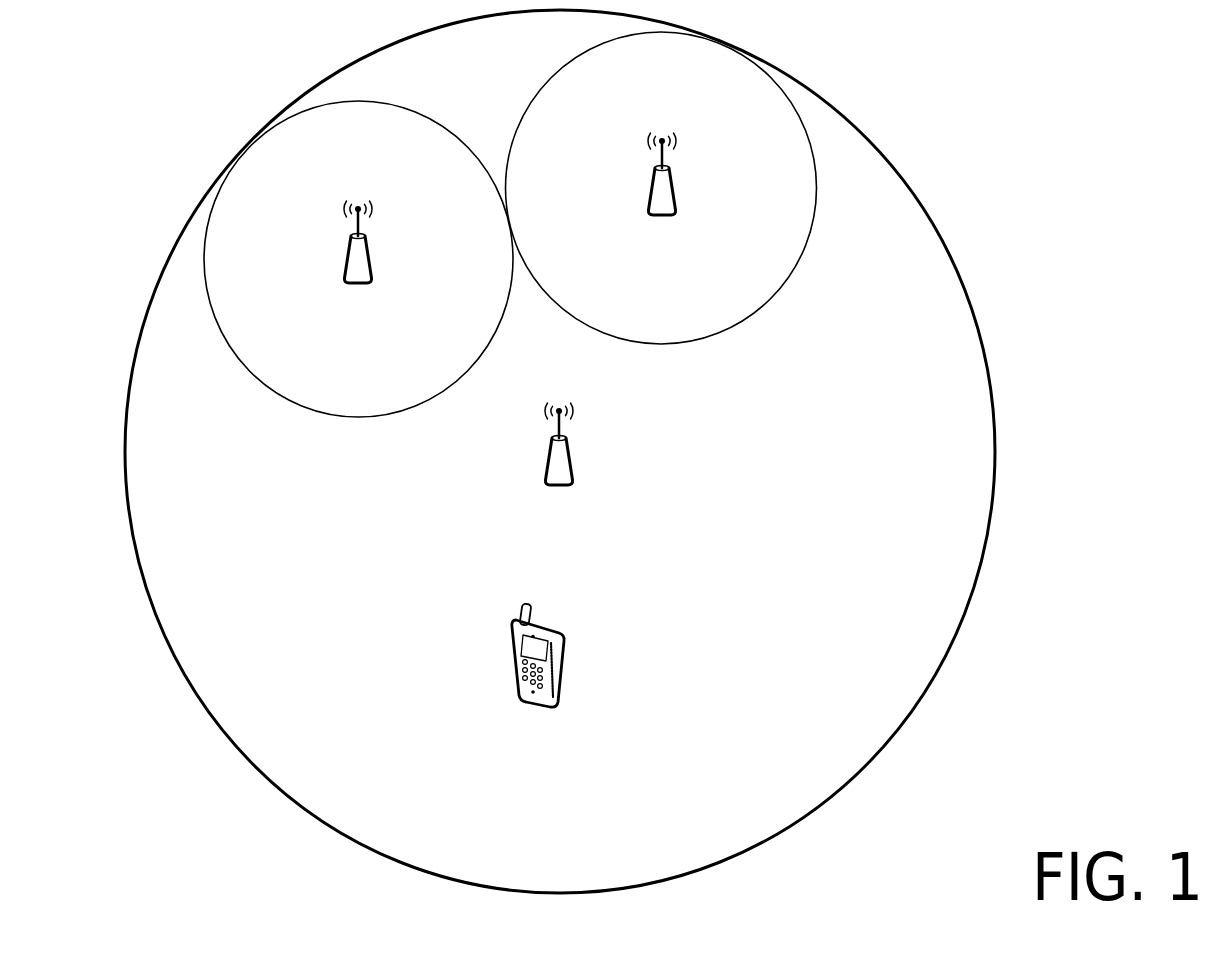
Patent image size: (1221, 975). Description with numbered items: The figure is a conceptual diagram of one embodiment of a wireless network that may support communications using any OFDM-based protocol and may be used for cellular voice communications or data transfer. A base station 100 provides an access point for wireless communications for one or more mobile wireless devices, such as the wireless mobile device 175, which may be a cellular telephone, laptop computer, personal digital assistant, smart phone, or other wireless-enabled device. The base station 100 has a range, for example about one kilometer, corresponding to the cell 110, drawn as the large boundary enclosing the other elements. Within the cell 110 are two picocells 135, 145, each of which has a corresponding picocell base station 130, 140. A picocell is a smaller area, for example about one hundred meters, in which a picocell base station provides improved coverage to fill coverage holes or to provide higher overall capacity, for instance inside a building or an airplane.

The base station 100 is at (571, 455).
The cell 110 is at (858, 128).
The picocell base station 130 is at (370, 270).
The picocell 135 is at (400, 103).
The picocell base station 140 is at (673, 187).
The picocell 145 is at (778, 292).
The wireless mobile device 175 is at (565, 682).